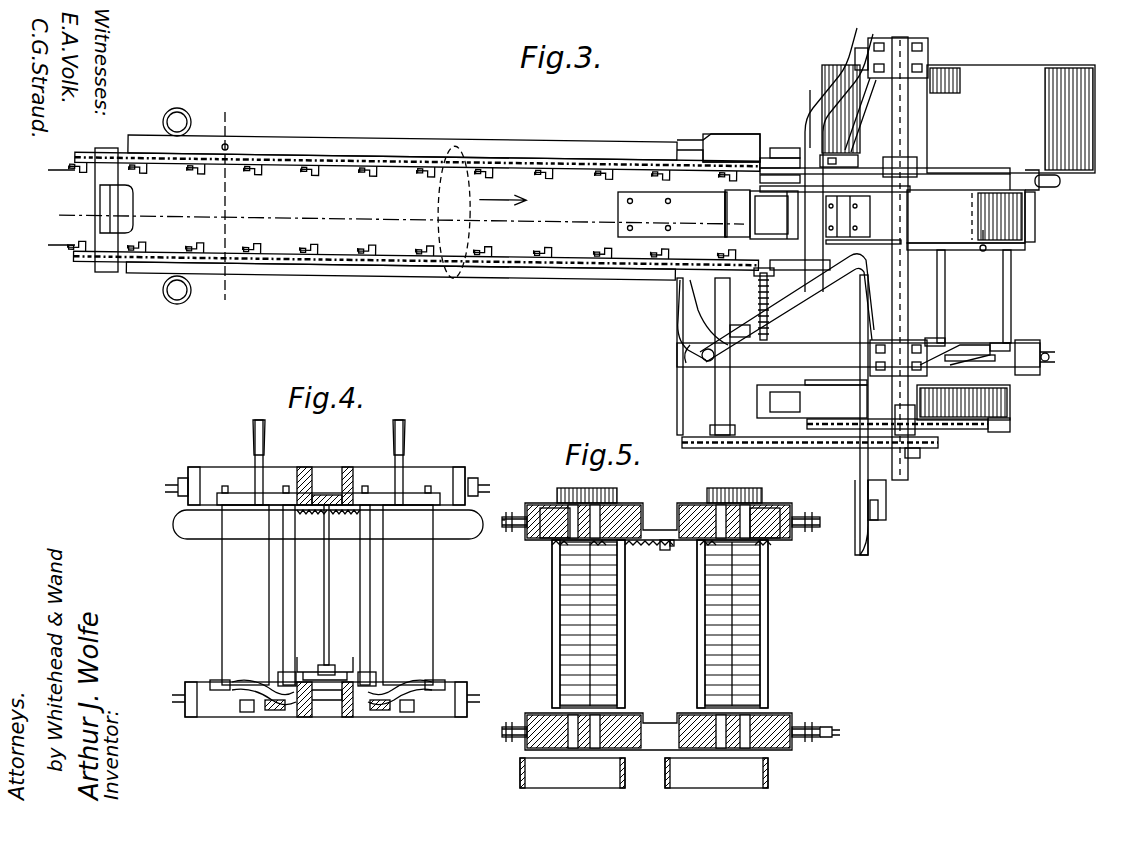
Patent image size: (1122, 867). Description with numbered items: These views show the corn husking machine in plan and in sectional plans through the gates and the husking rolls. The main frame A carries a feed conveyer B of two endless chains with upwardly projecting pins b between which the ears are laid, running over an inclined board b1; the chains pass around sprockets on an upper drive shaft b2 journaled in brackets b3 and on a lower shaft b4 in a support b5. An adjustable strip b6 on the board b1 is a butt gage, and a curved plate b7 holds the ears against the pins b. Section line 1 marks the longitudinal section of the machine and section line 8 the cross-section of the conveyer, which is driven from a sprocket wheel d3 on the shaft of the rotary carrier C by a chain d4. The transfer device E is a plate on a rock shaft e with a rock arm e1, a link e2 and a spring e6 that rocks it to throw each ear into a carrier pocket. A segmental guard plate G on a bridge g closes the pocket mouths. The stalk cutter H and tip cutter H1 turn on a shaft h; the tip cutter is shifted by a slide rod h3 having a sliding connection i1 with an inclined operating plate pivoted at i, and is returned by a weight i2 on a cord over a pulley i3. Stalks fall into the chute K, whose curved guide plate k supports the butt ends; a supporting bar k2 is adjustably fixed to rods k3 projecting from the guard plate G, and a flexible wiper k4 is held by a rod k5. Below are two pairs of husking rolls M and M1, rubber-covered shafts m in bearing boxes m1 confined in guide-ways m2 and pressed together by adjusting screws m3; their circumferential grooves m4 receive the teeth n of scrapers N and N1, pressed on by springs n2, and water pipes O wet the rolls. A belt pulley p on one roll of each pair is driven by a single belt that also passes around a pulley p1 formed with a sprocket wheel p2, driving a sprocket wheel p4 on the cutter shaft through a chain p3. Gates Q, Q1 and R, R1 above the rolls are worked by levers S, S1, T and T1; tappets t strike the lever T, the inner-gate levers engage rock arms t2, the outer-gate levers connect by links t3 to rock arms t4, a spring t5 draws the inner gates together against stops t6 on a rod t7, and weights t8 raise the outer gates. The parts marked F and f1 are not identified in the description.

In FIG. 3, the section line 1 is at (1055, 254).
In FIG. 3, the section line 8 is at (224, 202).
In FIG. 3, the main frame A is at (1022, 372).
In FIG. 4, the main frame A is at (303, 468).
In FIG. 5, the main frame A is at (644, 508).
In FIG. 3, the feed conveyer B is at (401, 208).
In FIG. 3, the pins b is at (262, 175).
In FIG. 3, the inclined board b1 is at (312, 274).
In FIG. 3, the drive shaft b2 is at (714, 314).
In FIG. 3, the brackets b3 is at (738, 132).
In FIG. 3, the shaft b4 is at (100, 205).
In FIG. 3, the support or frame b5 is at (162, 295).
In FIG. 3, the strip b6 is at (396, 133).
In FIG. 3, the plate b7 is at (630, 214).
In FIG. 3, the rotary carrier C is at (1025, 215).
In FIG. 3, the sprocket wheel d3 is at (920, 455).
In FIG. 3, the chain d4 is at (790, 448).
In FIG. 3, the transfer device E is at (720, 210).
In FIG. 3, the rock shaft e is at (752, 282).
In FIG. 3, the rock arm e1 is at (794, 142).
In FIG. 3, the link e2 is at (812, 88).
In FIG. 3, the spring e6 is at (741, 331).
In FIG. 3, the plate F is at (1035, 182).
In FIG. 3, the pin f1 is at (985, 250).
In FIG. 3, the segmental guard plate G is at (737, 213).
In FIG. 3, the bridge g is at (810, 288).
In FIG. 3, the stalk cutter H is at (968, 170).
In FIG. 3, the tip cutter H1 is at (966, 220).
In FIG. 3, the cutter shaft h is at (912, 125).
In FIG. 3, the slide rod h3 is at (812, 399).
In FIG. 3, the pivot i is at (868, 484).
In FIG. 3, the sliding connection i1 is at (863, 220).
In FIG. 3, the weight i2 is at (886, 490).
In FIG. 3, the pulley i3 is at (878, 525).
In FIG. 3, the stalk discharge chute K is at (958, 119).
In FIG. 3, the curved guide plate k is at (834, 72).
In FIG. 3, the supporting bar k2 is at (770, 158).
In FIG. 3, the horizontal rods k3 is at (774, 215).
In FIG. 3, the flexible wiper or shield k4 is at (867, 115).
In FIG. 3, the rod k5 is at (862, 38).
In FIG. 5, the husking rolls M is at (752, 624).
In FIG. 5, the husking rolls M1 is at (569, 624).
In FIG. 5, the rubber-covered shafts m is at (633, 700).
In FIG. 5, the bearing boxes m1 is at (680, 708).
In FIG. 5, the guide-ways m2 is at (512, 707).
In FIG. 3, the adjusting screws m3 is at (1055, 357).
In FIG. 4, the adjusting screws m3 is at (170, 480).
In FIG. 5, the adjusting screws m3 is at (840, 732).
In FIG. 5, the circumferential grooves m4 is at (698, 618).
In FIG. 5, the scraper N is at (682, 648).
In FIG. 5, the scraper N1 is at (588, 624).
In FIG. 5, the fingers or teeth n is at (573, 634).
In FIG. 5, the springs n2 is at (660, 548).
In FIG. 4, the water supply pipes O is at (404, 466).
In FIG. 3, the belt pulley p is at (1030, 426).
In FIG. 5, the belt pulley p is at (517, 772).
In FIG. 3, the pulley p1 is at (786, 399).
In FIG. 3, the sprocket wheel p2 is at (970, 446).
In FIG. 3, the chain p3 is at (795, 425).
In FIG. 3, the sprocket wheel p4 is at (905, 448).
In FIG. 3, the inner gate Q is at (945, 283).
In FIG. 4, the inner gate Q is at (358, 570).
In FIG. 3, the outer gate Q1 is at (1000, 283).
In FIG. 4, the outer gate Q1 is at (408, 595).
In FIG. 4, the inner gate R is at (290, 572).
In FIG. 3, the outer gate R1 is at (800, 289).
In FIG. 4, the outer gate R1 is at (245, 595).
In FIG. 3, the operating lever S is at (955, 350).
In FIG. 4, the operating lever S is at (392, 688).
In FIG. 3, the operating lever S1 is at (975, 345).
In FIG. 4, the operating lever S1 is at (378, 712).
In FIG. 4, the operating lever T is at (272, 682).
In FIG. 4, the operating lever T1 is at (272, 712).
In FIG. 3, the tappets t is at (716, 356).
In FIG. 4, the rock arms t2 is at (382, 642).
In FIG. 3, the links t3 is at (1005, 343).
In FIG. 4, the links t3 is at (418, 727).
In FIG. 3, the rock arms t4 is at (998, 355).
In FIG. 4, the rock arms t4 is at (452, 664).
In FIG. 4, the spring t5 is at (328, 523).
In FIG. 4, the stops t6 is at (330, 656).
In FIG. 4, the rod t7 is at (322, 597).
In FIG. 3, the weights t8 is at (1062, 183).
In FIG. 4, the weights t8 is at (486, 544).